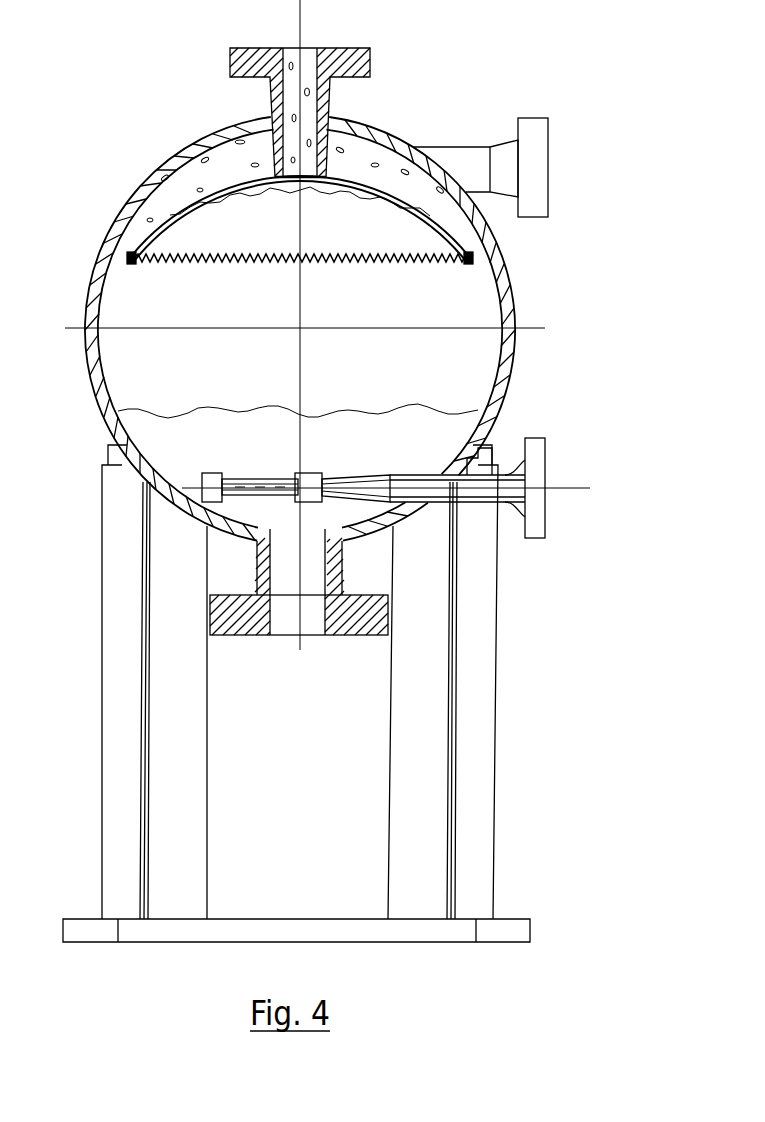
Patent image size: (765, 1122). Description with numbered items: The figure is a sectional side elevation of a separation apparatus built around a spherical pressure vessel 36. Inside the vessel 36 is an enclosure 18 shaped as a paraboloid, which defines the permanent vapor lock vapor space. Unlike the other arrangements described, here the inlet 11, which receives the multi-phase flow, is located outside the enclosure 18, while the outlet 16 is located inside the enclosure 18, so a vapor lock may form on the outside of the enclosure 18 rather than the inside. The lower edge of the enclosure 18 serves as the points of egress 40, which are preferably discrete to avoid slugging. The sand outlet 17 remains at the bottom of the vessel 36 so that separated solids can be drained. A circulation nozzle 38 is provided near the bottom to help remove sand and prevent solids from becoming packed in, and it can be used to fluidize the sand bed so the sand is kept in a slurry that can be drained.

The inlet 11 is at (548, 185).
The outlet 16 is at (333, 102).
The sand outlet 17 is at (383, 618).
The enclosure 18 is at (160, 207).
The vessel 36 is at (512, 375).
The circulation nozzle 38 is at (333, 476).
The points of egress 40 is at (128, 261).